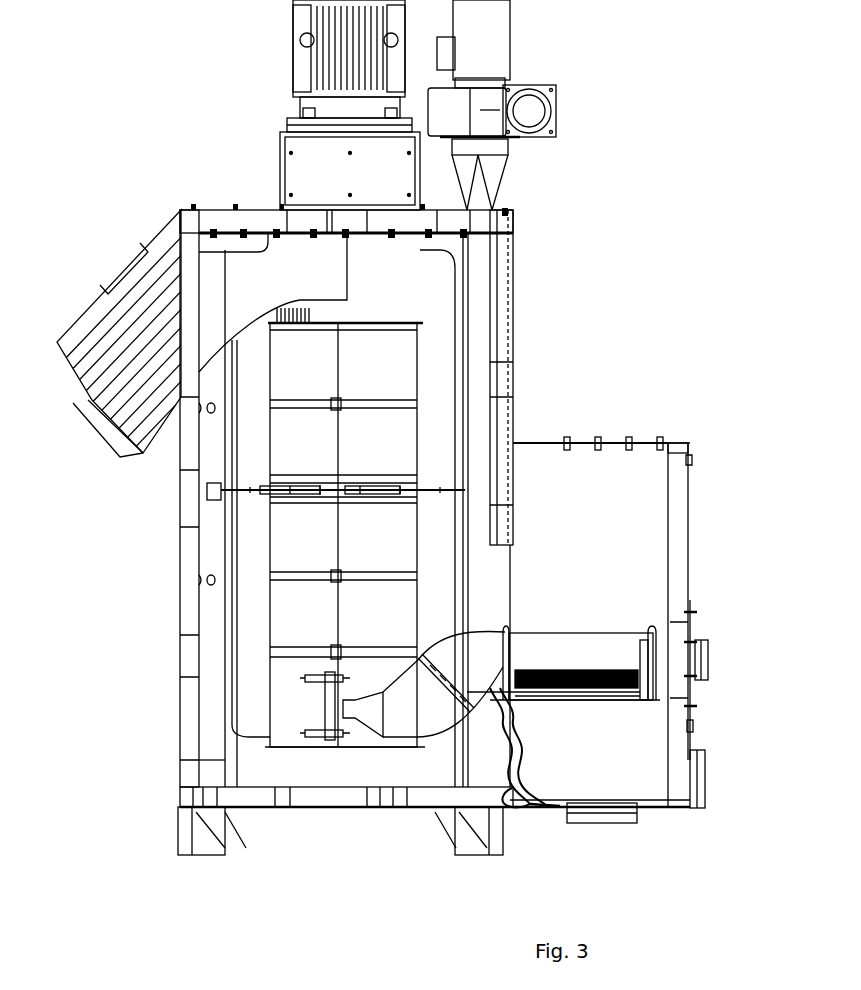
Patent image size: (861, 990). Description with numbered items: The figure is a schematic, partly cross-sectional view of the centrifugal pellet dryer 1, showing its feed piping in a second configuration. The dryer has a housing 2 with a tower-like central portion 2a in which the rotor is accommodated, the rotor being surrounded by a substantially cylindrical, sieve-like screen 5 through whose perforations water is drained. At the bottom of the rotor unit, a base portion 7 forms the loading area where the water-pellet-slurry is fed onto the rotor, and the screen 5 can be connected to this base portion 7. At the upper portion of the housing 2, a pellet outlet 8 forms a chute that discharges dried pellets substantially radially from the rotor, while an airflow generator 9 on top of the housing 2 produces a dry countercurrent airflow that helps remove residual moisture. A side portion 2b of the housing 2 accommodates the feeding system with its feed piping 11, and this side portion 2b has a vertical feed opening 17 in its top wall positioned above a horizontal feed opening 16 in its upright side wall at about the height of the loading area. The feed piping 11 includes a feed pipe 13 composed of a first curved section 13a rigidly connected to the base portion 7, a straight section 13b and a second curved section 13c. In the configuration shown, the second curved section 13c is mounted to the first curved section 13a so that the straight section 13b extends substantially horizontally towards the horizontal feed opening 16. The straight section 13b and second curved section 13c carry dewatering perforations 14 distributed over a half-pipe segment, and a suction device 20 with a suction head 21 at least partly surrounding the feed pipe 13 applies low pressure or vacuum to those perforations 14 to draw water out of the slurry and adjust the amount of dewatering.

The centrifugal pellet dryer 1 is at (614, 128).
The housing 2 is at (178, 590).
The tower-like central portion 2a is at (183, 553).
The side portion 2b is at (688, 445).
The screen 5 is at (410, 365).
The base portion 7 is at (270, 749).
The pellet outlet 8 is at (107, 440).
The airflow generator 9 is at (283, 165).
The feed piping 11 is at (622, 610).
The feed pipe 13 is at (566, 632).
The first curved section 13a is at (405, 720).
The straight section 13b is at (532, 644).
The second curved section 13c is at (529, 748).
The dewatering perforations 14 is at (590, 688).
The horizontal feed opening 16 is at (693, 641).
The vertical feed opening 17 is at (613, 441).
The suction device 20 is at (563, 810).
The suction head 21 is at (630, 706).